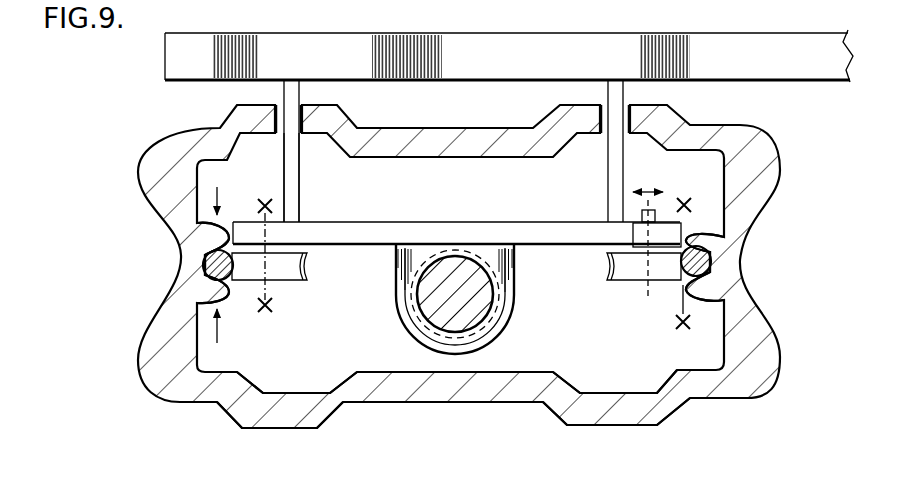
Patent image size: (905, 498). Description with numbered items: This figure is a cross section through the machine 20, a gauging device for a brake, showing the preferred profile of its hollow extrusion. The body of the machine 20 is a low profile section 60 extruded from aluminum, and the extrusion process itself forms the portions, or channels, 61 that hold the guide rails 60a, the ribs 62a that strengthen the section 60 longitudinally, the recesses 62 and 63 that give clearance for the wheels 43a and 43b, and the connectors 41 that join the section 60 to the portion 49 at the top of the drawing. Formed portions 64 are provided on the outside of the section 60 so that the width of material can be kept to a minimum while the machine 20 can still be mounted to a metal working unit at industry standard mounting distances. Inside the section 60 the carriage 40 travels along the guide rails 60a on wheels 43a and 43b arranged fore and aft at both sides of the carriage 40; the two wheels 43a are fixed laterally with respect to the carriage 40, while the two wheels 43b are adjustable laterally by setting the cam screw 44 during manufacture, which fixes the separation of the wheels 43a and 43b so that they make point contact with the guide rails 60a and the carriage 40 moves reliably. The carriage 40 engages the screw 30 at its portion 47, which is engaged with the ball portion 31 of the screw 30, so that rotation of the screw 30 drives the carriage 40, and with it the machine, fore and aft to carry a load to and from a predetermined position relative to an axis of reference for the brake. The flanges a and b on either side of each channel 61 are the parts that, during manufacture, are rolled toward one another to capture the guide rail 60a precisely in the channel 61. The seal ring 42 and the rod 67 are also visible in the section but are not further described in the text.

The machine 20 is at (188, 409).
The screw 30 is at (430, 312).
The ball portion 31 is at (484, 334).
The carriage 40 is at (373, 238).
The connectors 41 is at (293, 157).
The seal ring 42 is at (233, 287).
The fixed wheels 43a is at (300, 287).
The adjustable wheels 43b is at (616, 280).
The cam screw 44 is at (662, 218).
The engagement portion 47 is at (506, 330).
The portion 49 is at (702, 38).
The low profile section 60 is at (745, 388).
The guide rails 60a is at (704, 292).
The channels 61 is at (738, 272).
The recess 62 is at (278, 388).
The ribs 62a is at (618, 422).
The recess 63 is at (263, 156).
The formed portions 64 is at (172, 233).
The rod 67 is at (290, 82).
The flange a is at (742, 232).
The flange b is at (743, 283).